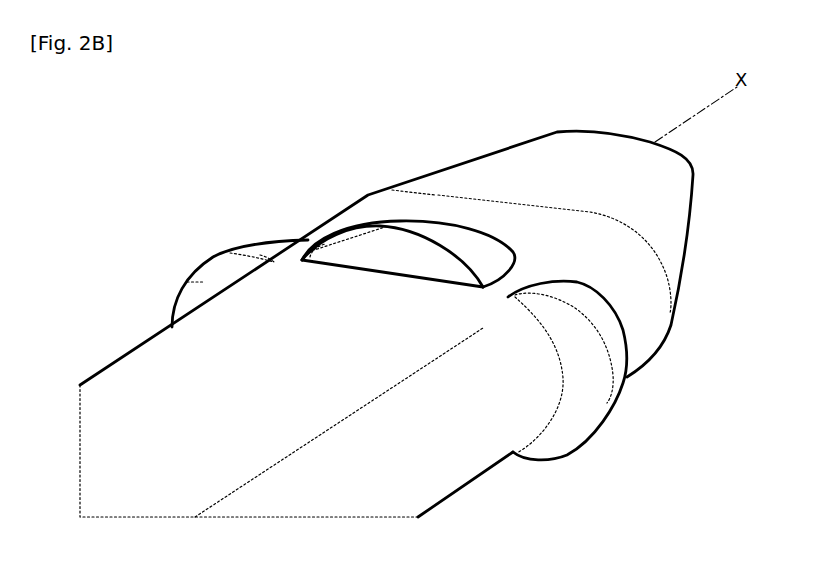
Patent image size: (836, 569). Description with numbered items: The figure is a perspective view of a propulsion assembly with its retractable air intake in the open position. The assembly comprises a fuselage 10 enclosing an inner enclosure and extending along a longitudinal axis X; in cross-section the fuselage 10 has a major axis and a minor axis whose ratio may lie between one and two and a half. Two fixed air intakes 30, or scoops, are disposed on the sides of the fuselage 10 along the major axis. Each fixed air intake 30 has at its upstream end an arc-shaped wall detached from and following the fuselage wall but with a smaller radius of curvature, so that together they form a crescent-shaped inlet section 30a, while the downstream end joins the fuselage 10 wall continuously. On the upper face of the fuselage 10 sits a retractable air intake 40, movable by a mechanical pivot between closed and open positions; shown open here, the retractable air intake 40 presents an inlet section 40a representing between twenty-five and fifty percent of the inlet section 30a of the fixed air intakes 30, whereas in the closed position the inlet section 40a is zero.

The fuselage 10 is at (142, 365).
The fixed air intake 30 is at (254, 245).
The inlet section 30a is at (186, 282).
The retractable air intake 40 is at (488, 247).
The inlet section 40a is at (392, 253).